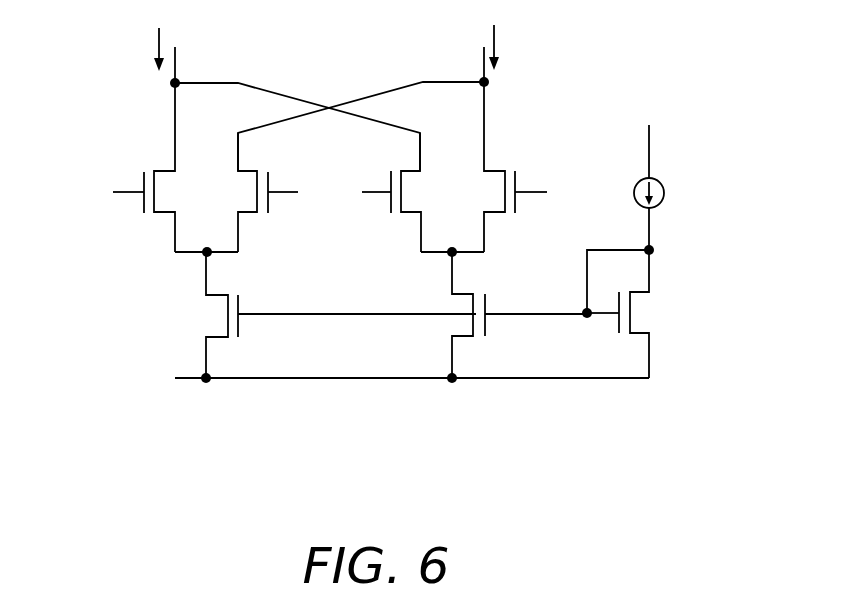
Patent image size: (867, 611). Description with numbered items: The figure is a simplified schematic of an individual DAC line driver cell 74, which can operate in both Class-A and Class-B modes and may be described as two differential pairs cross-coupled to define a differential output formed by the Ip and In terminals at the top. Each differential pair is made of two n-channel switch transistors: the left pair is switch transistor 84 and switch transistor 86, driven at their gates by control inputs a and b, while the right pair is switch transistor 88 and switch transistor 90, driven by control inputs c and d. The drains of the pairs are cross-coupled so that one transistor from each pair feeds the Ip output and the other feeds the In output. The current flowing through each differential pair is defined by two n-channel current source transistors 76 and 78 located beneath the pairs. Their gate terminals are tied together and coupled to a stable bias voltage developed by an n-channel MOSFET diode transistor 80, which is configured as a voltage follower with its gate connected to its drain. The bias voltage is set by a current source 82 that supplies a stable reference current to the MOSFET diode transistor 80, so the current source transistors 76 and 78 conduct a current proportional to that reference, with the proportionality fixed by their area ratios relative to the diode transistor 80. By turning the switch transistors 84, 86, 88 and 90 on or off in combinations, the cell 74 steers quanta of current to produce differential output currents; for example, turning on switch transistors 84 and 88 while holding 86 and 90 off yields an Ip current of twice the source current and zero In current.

The line driver cell 74 is at (594, 76).
The current source transistor 76 is at (216, 318).
The current source transistor 78 is at (459, 325).
The MOSFET diode transistor 80 is at (641, 313).
The current source 82 is at (664, 189).
The switch transistor 84 is at (170, 180).
The switch transistor 86 is at (249, 187).
The switch transistor 88 is at (416, 180).
The switch transistor 90 is at (497, 184).